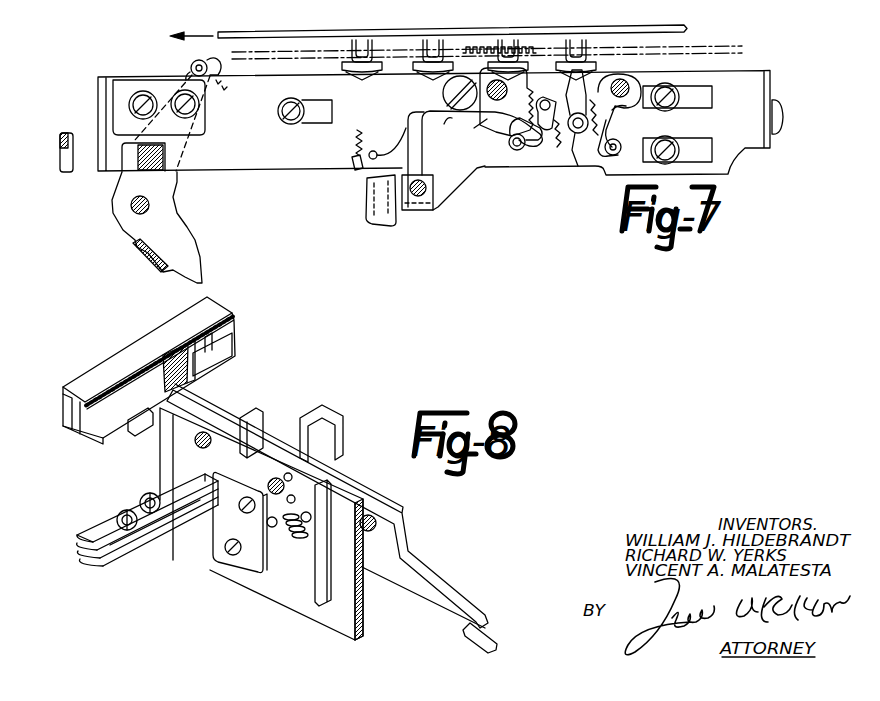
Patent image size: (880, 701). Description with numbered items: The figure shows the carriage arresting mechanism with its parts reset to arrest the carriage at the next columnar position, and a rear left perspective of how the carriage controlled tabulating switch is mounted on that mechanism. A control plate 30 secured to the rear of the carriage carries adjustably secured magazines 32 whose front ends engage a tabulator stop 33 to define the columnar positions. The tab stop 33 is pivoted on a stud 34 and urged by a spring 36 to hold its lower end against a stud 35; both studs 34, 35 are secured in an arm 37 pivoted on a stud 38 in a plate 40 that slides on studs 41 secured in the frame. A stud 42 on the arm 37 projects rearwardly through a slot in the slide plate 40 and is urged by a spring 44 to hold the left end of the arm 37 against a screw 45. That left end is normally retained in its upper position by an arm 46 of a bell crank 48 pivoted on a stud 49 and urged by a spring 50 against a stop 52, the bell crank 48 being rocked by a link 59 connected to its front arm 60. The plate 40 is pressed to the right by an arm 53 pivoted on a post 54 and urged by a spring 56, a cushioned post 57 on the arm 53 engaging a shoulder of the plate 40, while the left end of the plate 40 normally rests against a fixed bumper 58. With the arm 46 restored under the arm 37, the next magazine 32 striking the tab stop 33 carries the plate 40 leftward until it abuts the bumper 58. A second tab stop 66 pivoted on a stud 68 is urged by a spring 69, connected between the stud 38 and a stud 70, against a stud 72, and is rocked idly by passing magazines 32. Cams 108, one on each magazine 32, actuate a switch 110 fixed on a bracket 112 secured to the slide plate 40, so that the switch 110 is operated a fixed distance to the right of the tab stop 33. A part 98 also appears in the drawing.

In FIG. 7, the control plate 30 is at (474, 26).
In FIG. 8, the control plate 30 is at (222, 303).
In FIG. 7, the magazines 32 is at (433, 62).
In FIG. 8, the magazines 32 is at (214, 345).
In FIG. 8, the tabulator stop 33 is at (347, 457).
In FIG. 7, the stud 34 is at (475, 125).
In FIG. 8, the stud 34 is at (373, 532).
In FIG. 7, the stud 35 is at (508, 137).
In FIG. 7, the spring 36 is at (514, 152).
In FIG. 7, the arm 37 is at (446, 122).
In FIG. 8, the arm 37 is at (447, 608).
In FIG. 7, the stud 38 is at (536, 90).
In FIG. 8, the stud 38 is at (270, 481).
In FIG. 7, the plate 40 is at (318, 171).
In FIG. 8, the plate 40 is at (343, 627).
In FIG. 7, the studs 41 is at (288, 122).
In FIG. 8, the stud 42 is at (272, 535).
In FIG. 7, the spring 44 is at (505, 116).
In FIG. 8, the spring 44 is at (298, 545).
In FIG. 7, the screw 45 is at (444, 96).
In FIG. 7, the arm 46 is at (410, 128).
In FIG. 8, the arm 46 is at (477, 640).
In FIG. 7, the bell crank 48 is at (428, 159).
In FIG. 7, the stud 49 is at (452, 199).
In FIG. 7, the spring 50 is at (354, 140).
In FIG. 7, the stop 52 is at (377, 151).
In FIG. 7, the arm 53 is at (190, 232).
In FIG. 7, the post 54 is at (131, 205).
In FIG. 7, the spring 56 is at (208, 62).
In FIG. 7, the cushioned post 57 is at (165, 172).
In FIG. 7, the fixed bumper 58 is at (68, 132).
In FIG. 7, the link 59 is at (368, 217).
In FIG. 7, the front arm 60 is at (418, 206).
In FIG. 7, the second tab stop 66 is at (612, 112).
In FIG. 8, the second tab stop 66 is at (254, 406).
In FIG. 7, the stud 68 is at (628, 108).
In FIG. 8, the stud 68 is at (212, 445).
In FIG. 7, the spring 69 is at (577, 168).
In FIG. 7, the stud 70 is at (621, 152).
In FIG. 7, the stud 72 is at (568, 136).
In FIG. 7, the stop 98 is at (780, 100).
In FIG. 7, the cams 108 is at (362, 73).
In FIG. 8, the cams 108 is at (130, 430).
In FIG. 8, the switch 110 is at (162, 494).
In FIG. 8, the bracket 112 is at (193, 532).